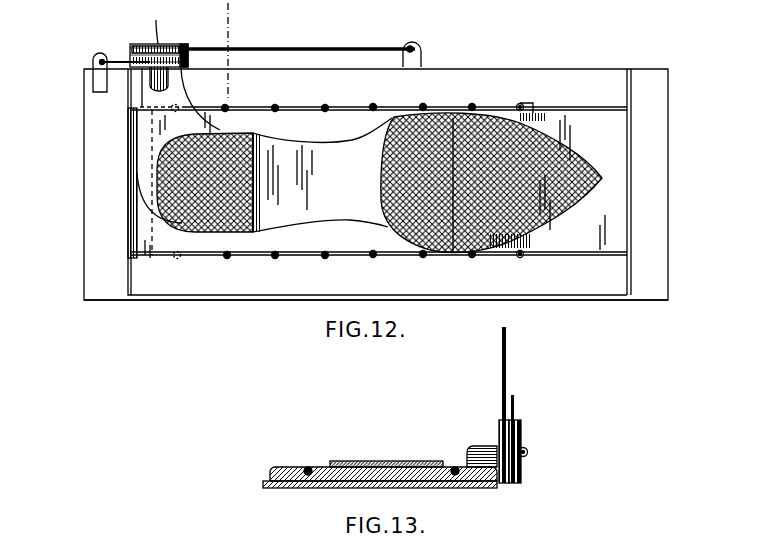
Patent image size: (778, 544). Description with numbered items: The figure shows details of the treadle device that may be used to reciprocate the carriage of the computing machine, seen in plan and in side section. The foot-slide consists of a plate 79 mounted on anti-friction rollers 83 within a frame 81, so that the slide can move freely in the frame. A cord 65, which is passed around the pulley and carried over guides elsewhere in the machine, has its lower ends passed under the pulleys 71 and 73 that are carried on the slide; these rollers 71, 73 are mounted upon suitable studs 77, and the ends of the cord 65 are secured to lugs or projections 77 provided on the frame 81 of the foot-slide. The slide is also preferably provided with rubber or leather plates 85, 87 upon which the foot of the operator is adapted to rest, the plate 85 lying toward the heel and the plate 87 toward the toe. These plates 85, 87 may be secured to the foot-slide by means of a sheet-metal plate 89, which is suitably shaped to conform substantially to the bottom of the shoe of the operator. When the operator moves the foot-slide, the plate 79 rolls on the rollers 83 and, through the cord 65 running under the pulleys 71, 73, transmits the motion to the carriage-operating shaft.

In FIG. 12, the cord 65 is at (291, 47).
In FIG. 13, the cord 65 is at (507, 379).
In FIG. 12, the pulley 71 is at (142, 57).
In FIG. 13, the pulley 71 is at (500, 428).
In FIG. 12, the pulley 73 is at (176, 44).
In FIG. 13, the pulley 73 is at (521, 438).
In FIG. 12, the lugs or projections 77 is at (433, 46).
In FIG. 13, the lugs or projections 77 is at (528, 452).
In FIG. 12, the foot-slide plate 79 is at (197, 243).
In FIG. 13, the foot-slide plate 79 is at (349, 465).
In FIG. 12, the frame 81 is at (87, 267).
In FIG. 13, the frame 81 is at (270, 473).
In FIG. 12, the anti-friction rollers 83 is at (225, 258).
In FIG. 13, the anti-friction rollers 83 is at (308, 467).
In FIG. 12, the rubber or leather plate 85 is at (250, 178).
In FIG. 12, the rubber or leather plate 87 is at (395, 172).
In FIG. 12, the sheet-metal plate 89 is at (375, 185).
In FIG. 13, the sheet-metal plate 89 is at (402, 460).